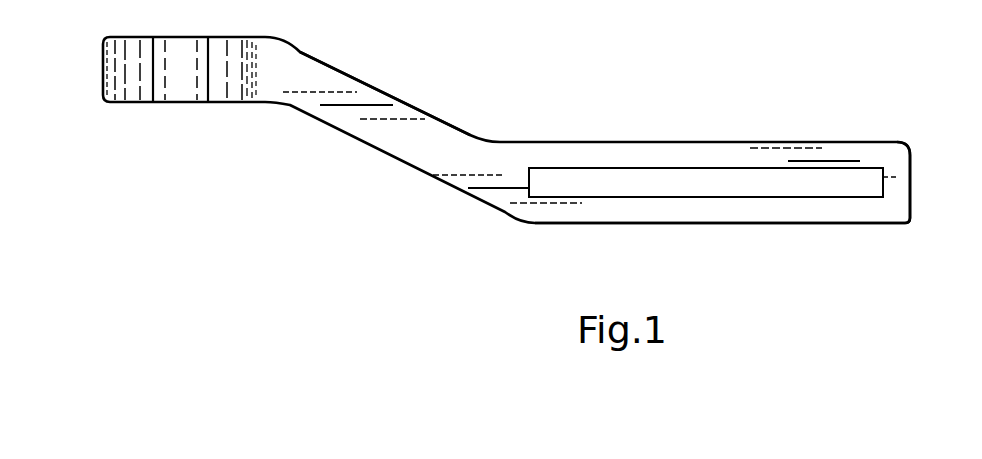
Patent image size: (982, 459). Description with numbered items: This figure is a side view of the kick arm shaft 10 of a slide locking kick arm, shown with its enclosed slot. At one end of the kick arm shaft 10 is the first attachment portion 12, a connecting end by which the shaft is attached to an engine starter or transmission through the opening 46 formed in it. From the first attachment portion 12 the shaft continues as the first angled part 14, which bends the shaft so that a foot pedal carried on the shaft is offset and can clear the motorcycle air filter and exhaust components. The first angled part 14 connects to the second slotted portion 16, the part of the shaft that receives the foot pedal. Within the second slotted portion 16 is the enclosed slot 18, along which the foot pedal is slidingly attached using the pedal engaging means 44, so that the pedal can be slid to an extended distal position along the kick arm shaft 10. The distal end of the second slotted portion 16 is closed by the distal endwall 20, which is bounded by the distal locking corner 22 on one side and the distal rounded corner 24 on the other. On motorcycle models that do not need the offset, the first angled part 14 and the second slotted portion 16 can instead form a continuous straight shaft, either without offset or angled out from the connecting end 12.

The kick arm shaft 10 is at (347, 183).
The first attachment portion 12 is at (153, 103).
The first angled part 14 is at (394, 96).
The second slotted portion 16 is at (733, 224).
The enclosed slot 18 is at (815, 184).
The distal endwall 20 is at (912, 185).
The distal locking corner 22 is at (907, 226).
The distal rounded corner 24 is at (904, 142).
The pedal engaging means 44 is at (185, 450).
The opening 46 is at (206, 103).